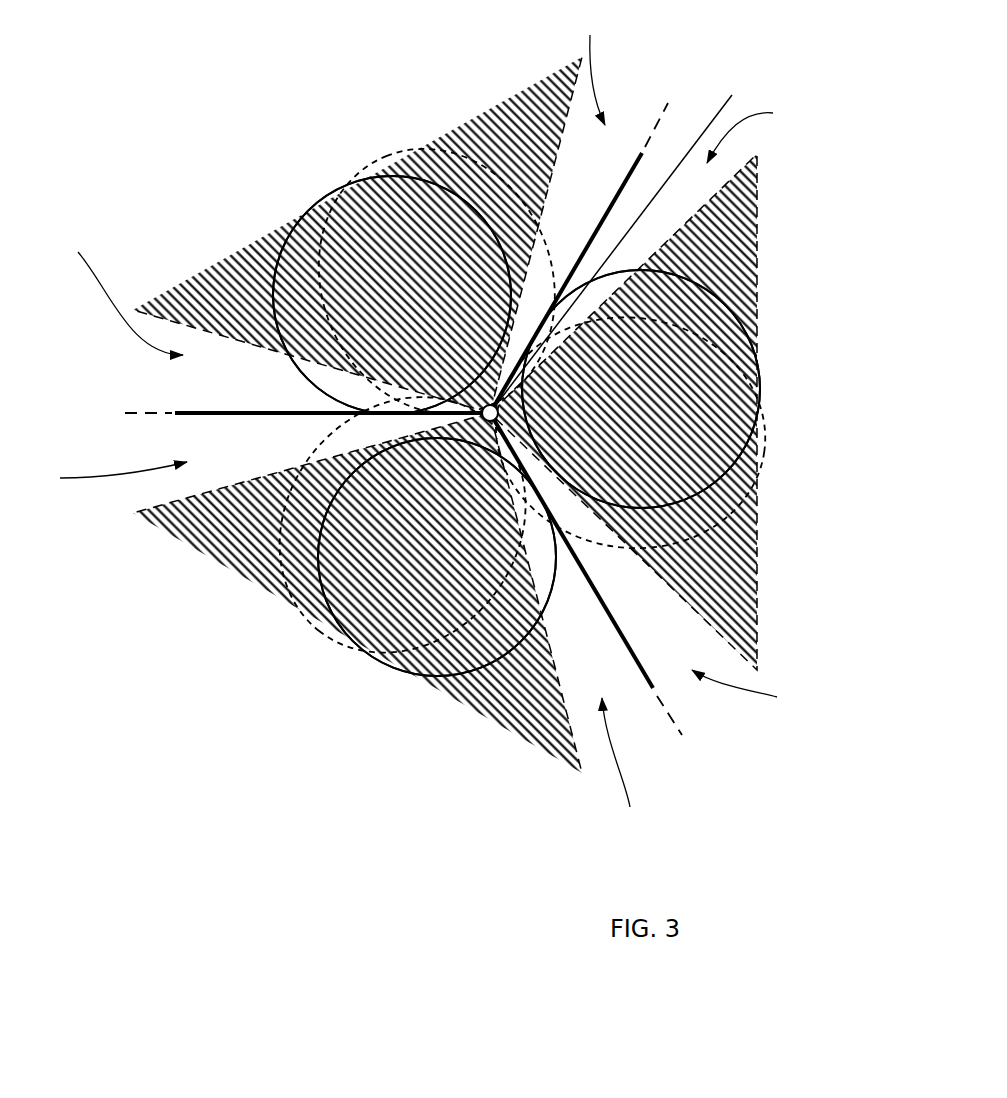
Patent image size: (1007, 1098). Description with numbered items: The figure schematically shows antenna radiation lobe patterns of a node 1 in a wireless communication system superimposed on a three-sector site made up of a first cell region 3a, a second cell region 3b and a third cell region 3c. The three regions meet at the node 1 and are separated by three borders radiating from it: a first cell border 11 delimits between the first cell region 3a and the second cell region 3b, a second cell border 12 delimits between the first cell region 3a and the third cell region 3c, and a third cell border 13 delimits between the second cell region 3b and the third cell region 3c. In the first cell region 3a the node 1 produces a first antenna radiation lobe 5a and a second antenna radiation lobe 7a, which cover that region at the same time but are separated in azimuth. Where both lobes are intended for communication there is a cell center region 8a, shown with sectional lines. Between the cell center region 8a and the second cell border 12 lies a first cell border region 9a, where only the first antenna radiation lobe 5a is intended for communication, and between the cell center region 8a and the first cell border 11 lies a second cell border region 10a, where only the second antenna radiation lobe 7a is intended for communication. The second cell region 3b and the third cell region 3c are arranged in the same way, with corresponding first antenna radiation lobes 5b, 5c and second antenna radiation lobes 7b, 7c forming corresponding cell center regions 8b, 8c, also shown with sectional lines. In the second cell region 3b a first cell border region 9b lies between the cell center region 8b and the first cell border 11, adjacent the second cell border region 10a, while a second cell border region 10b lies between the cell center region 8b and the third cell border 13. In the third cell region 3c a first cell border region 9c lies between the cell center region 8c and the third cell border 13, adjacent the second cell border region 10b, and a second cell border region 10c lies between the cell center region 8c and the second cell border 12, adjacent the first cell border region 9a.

The node 1 is at (619, 242).
The first cell region 3a is at (213, 210).
The second cell region 3b is at (780, 238).
The third cell region 3c is at (155, 568).
The first antenna radiation lobe 5a is at (285, 228).
The first antenna radiation lobe 5b is at (748, 328).
The first antenna radiation lobe 5c is at (422, 677).
The second antenna radiation lobe 7a is at (446, 148).
The second antenna radiation lobe 7b is at (748, 520).
The second antenna radiation lobe 7c is at (268, 557).
The cell center region 8a is at (385, 228).
The cell center region 8b is at (713, 433).
The cell center region 8c is at (365, 597).
The first cell border region 9a is at (112, 287).
The first cell border region 9b is at (761, 130).
The first cell border region 9c is at (638, 760).
The second cell border region 10a is at (582, 65).
The second cell border region 10b is at (761, 694).
The second cell border region 10c is at (93, 474).
The first cell border 11 is at (642, 153).
The second cell border 12 is at (180, 413).
The third cell border 13 is at (656, 689).